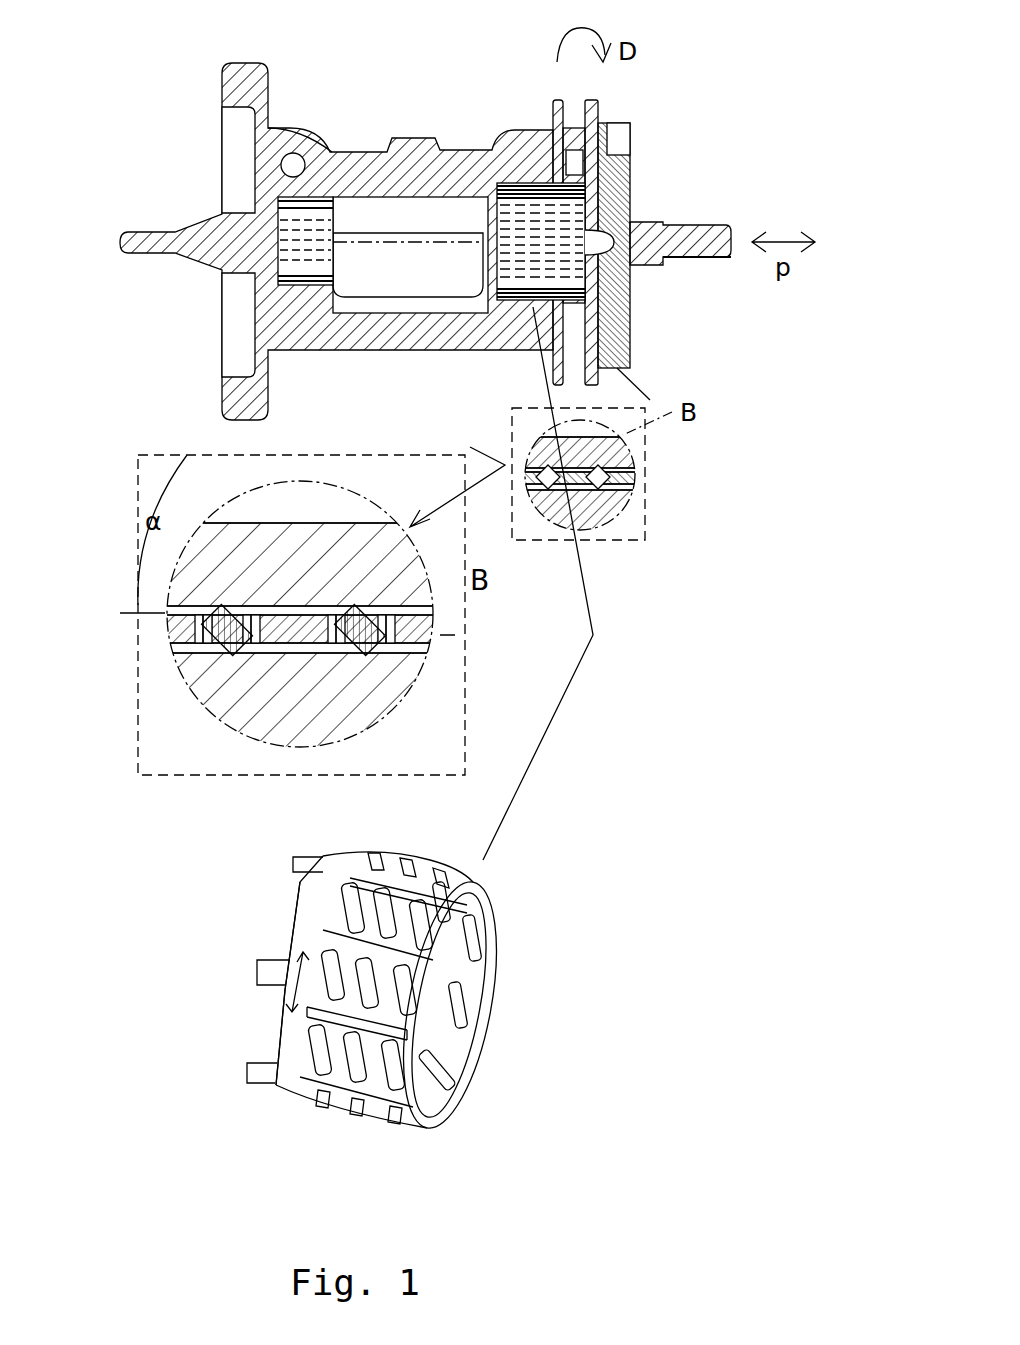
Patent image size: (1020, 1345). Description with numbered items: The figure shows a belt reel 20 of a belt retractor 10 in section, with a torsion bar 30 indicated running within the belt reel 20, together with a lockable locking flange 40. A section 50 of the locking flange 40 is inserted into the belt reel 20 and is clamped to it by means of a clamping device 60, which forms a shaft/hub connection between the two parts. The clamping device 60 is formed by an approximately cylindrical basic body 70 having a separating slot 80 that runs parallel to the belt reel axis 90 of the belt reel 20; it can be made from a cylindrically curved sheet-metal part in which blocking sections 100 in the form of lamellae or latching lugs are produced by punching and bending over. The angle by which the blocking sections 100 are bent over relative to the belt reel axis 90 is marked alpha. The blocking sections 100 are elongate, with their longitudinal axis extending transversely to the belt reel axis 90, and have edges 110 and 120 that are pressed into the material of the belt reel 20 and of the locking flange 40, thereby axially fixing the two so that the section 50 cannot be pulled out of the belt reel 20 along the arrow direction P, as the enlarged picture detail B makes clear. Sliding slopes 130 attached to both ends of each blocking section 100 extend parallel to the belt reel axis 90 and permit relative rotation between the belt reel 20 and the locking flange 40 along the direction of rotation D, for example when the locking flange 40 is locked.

The belt retractor 10 is at (135, 129).
The belt reel 20 is at (415, 153).
The torsion bar 30 is at (370, 213).
The locking flange 40 is at (672, 223).
The section of the locking flange 50 is at (540, 185).
The clamping device 60 is at (455, 635).
The basic body 70 is at (300, 940).
The separating slot 80 is at (493, 910).
The belt reel axis 90 is at (390, 240).
The blocking sections 100 is at (421, 914).
The edge 110 is at (217, 598).
The edge 120 is at (237, 667).
The sliding slopes 130 is at (420, 1105).